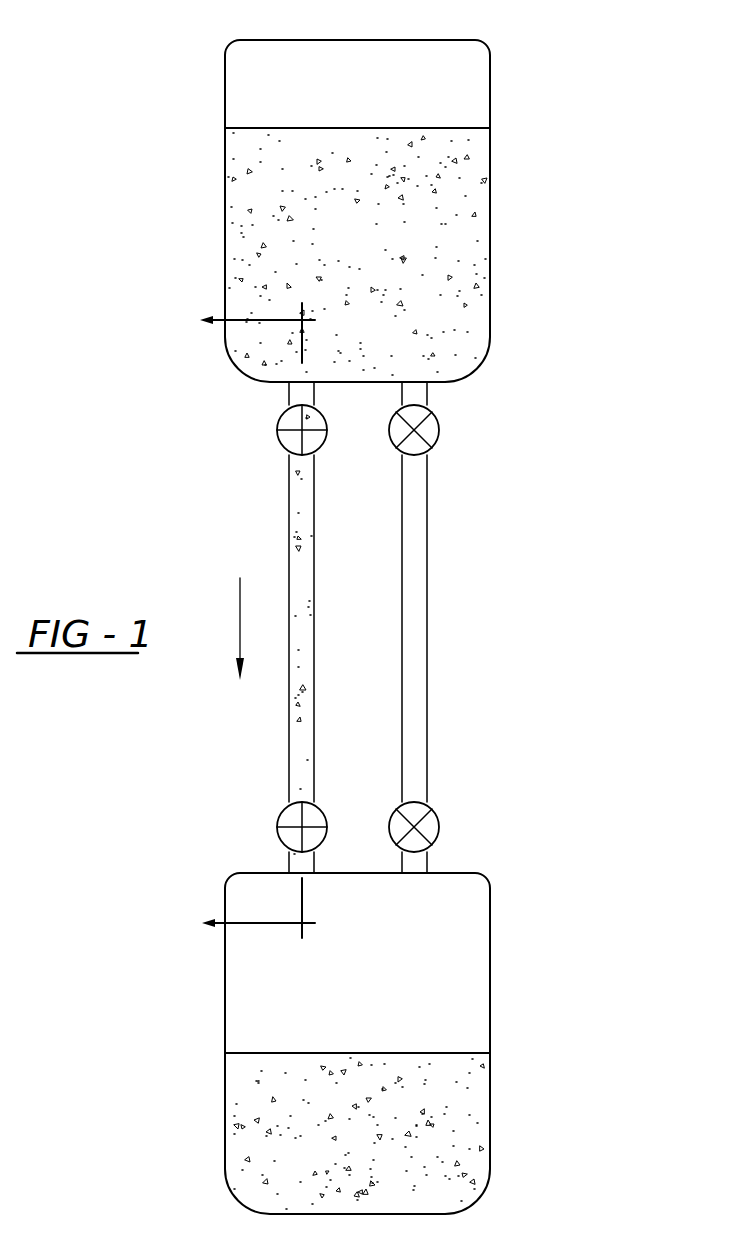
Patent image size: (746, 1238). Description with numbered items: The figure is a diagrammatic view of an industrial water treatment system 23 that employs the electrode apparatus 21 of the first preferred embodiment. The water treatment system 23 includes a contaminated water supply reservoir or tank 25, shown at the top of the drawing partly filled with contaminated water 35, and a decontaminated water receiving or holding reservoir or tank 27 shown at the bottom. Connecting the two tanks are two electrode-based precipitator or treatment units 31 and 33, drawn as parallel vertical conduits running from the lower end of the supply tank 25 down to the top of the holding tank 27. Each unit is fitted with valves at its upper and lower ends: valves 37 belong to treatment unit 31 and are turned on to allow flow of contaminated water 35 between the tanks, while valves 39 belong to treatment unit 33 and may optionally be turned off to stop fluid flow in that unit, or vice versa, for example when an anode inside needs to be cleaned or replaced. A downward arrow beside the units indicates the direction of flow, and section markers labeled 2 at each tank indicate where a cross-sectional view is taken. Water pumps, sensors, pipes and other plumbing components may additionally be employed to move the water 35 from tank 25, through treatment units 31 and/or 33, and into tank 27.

The electrode apparatus 21 is at (466, 581).
The industrial water treatment system 23 is at (558, 77).
The contaminated water supply reservoir or tank 25 is at (490, 187).
The decontaminated water receiving or holding reservoir or tank 27 is at (490, 1018).
The electrode-based precipitator or treatment unit 31 is at (302, 513).
The electrode-based precipitator or treatment unit 33 is at (415, 508).
The contaminated water 35 is at (257, 230).
The valves 37 is at (283, 417).
The valves 39 is at (440, 422).
The section line 2- 2 is at (242, 623).